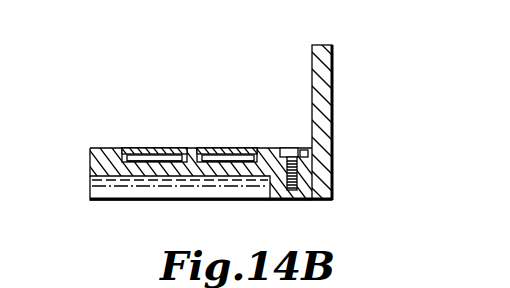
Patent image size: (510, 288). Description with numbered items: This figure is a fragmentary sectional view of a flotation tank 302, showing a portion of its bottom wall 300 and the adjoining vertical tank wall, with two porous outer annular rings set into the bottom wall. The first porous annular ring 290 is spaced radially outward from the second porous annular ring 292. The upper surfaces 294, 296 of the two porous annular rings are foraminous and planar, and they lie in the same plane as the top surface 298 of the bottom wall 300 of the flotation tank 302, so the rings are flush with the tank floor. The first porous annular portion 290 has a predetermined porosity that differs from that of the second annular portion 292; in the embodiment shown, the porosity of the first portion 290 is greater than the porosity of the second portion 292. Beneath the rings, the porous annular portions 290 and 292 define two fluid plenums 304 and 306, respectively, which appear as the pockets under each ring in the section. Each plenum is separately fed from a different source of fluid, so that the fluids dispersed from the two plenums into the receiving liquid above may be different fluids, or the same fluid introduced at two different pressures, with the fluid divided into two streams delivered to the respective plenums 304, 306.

The first porous annular ring 290 is at (228, 147).
The second porous annular ring 292 is at (163, 147).
The upper surface of first porous annular ring 294 is at (250, 148).
The upper surface of second porous annular ring 296 is at (140, 148).
The top surface of bottom wall 298 is at (100, 148).
The bottom wall 300 is at (105, 170).
The flotation tank 302 is at (338, 57).
The fluid plenum 304 is at (217, 160).
The fluid plenum 306 is at (148, 158).